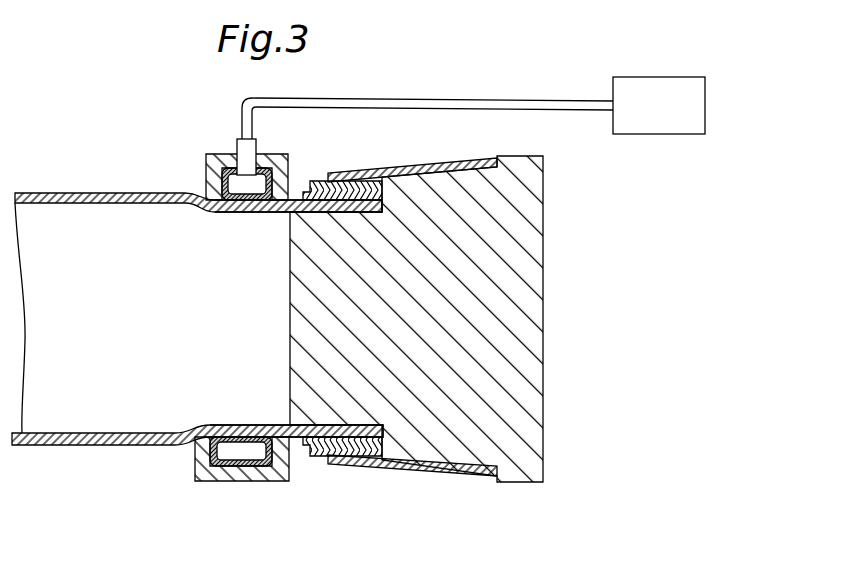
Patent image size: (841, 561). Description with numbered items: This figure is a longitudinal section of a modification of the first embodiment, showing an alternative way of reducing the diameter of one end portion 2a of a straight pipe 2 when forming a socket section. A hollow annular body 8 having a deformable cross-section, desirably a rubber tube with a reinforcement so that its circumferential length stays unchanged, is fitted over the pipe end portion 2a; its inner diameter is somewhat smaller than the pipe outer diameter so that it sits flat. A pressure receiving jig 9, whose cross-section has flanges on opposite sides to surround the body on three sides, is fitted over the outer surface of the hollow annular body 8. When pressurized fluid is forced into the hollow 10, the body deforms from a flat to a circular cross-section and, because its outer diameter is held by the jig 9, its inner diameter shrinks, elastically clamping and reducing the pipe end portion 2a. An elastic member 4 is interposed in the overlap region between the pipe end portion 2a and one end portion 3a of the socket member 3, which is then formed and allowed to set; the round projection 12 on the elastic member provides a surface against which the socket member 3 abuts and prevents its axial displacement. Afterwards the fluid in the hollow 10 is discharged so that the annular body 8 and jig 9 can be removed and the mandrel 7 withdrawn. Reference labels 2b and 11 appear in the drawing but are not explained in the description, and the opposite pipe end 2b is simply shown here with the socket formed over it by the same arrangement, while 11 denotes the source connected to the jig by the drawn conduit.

The straight pipe 2 is at (78, 193).
The one end portion of straight pipe 2a is at (264, 213).
The pipe end portion 2b is at (384, 435).
The socket member 3 is at (434, 170).
The one end portion of socket member 3a is at (350, 177).
The elastic member 4 is at (349, 461).
The mandrel 7 is at (525, 320).
The hollow annular body 8 is at (232, 155).
The pressure receiving jig 9 is at (206, 163).
The hollow 10 is at (243, 448).
The pressure source 11 is at (658, 123).
The round projection 12 is at (316, 458).